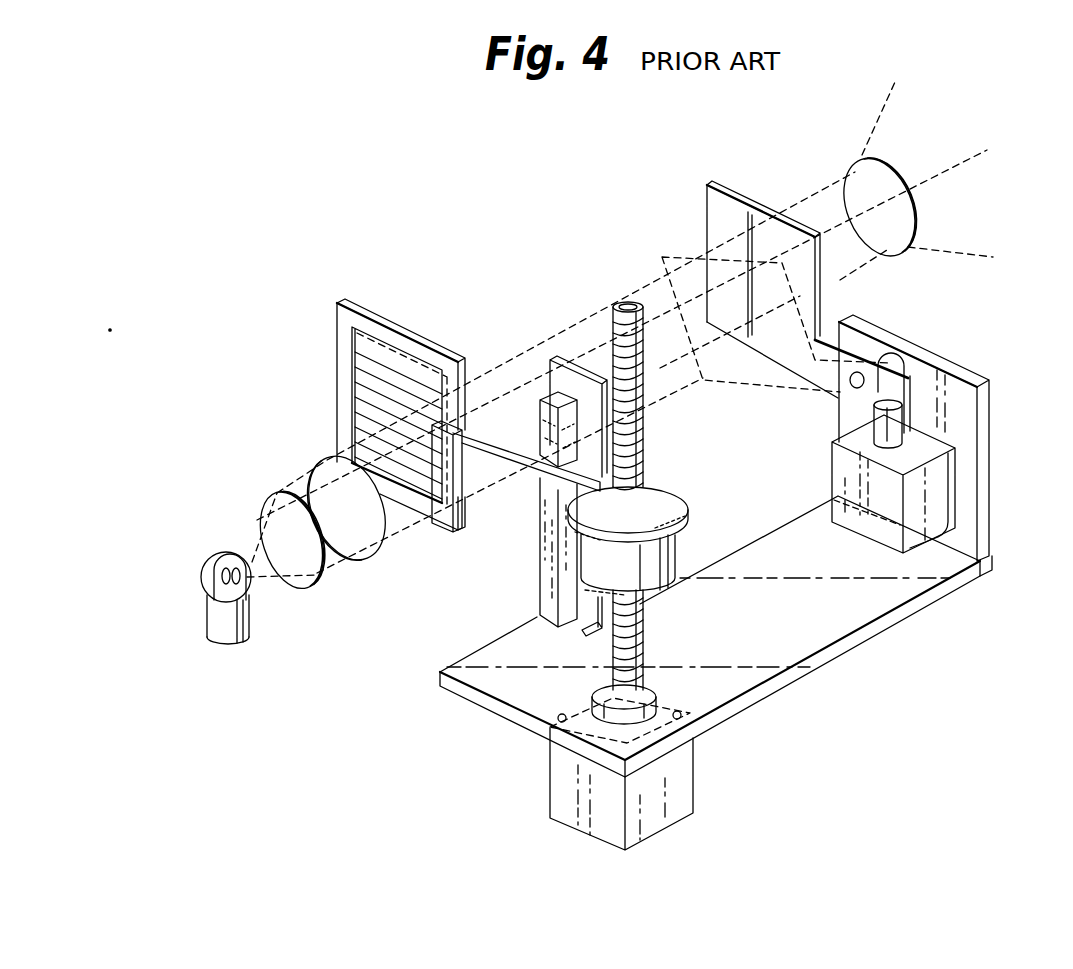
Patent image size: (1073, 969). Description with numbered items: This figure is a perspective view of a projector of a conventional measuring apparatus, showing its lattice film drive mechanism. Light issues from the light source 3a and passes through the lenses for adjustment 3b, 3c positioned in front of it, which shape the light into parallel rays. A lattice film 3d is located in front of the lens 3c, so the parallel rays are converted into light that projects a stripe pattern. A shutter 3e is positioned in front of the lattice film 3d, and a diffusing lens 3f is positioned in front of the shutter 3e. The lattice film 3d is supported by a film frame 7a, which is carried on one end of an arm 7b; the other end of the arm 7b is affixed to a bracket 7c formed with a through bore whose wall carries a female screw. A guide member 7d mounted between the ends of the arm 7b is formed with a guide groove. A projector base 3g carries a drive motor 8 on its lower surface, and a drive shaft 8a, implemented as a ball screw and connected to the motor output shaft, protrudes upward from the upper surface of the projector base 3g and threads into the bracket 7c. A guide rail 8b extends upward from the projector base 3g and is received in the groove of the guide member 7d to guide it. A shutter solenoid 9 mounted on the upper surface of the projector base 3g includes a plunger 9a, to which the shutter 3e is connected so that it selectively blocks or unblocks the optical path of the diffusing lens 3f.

The light source 3a is at (207, 577).
The lens for adjustment 3b is at (273, 518).
The lens for adjustment 3c is at (330, 477).
The lattice film 3d is at (373, 377).
The shutter 3e is at (720, 212).
The diffusing lens 3f is at (875, 178).
The projector base 3g is at (820, 655).
The film frame 7a is at (370, 323).
The arm 7b is at (520, 508).
The bracket 7c is at (645, 603).
The guide member 7d is at (525, 445).
The drive motor 8 is at (563, 797).
The drive shaft 8a is at (618, 340).
The guide rail 8b is at (545, 430).
The shutter solenoid 9 is at (937, 505).
The plunger 9a is at (890, 432).